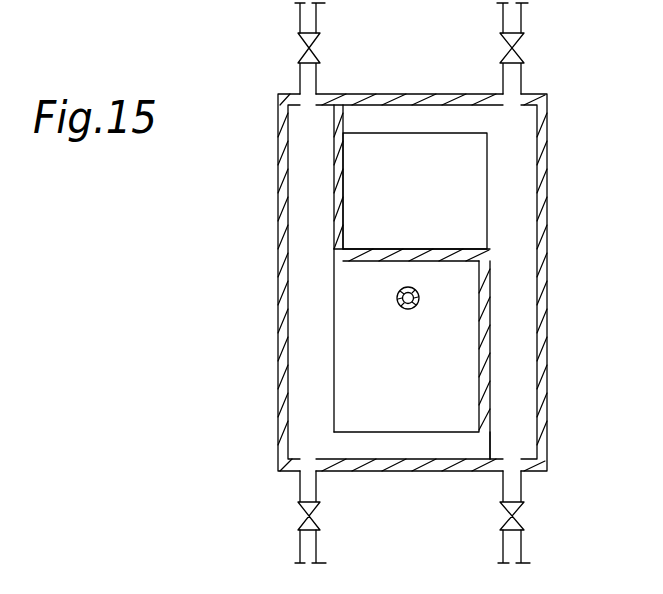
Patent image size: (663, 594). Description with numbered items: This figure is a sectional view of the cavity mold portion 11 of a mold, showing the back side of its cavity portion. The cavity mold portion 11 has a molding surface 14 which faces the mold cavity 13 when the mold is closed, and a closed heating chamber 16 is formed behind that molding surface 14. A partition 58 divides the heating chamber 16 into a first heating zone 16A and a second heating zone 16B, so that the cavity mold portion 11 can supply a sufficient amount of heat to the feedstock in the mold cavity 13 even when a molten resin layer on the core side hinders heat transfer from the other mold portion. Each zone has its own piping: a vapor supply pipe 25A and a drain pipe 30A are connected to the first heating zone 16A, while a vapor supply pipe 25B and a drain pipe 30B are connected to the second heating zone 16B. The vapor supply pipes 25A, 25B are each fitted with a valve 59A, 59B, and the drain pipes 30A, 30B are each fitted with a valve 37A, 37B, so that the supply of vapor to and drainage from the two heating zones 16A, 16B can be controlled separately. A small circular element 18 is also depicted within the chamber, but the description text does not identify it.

The cavity mold portion 11 is at (266, 386).
The mold cavity 13 is at (460, 172).
The molding surface 14 is at (465, 347).
The heating chamber 16 is at (290, 298).
The first heating zone 16A is at (296, 223).
The second heating zone 16B is at (522, 214).
The conduit 18 is at (409, 310).
The vapor supply pipe 25A is at (300, 25).
The vapor supply pipe 25B is at (515, 12).
The drain pipe 30A is at (300, 552).
The drain pipe 30B is at (513, 543).
The valve 37A is at (307, 524).
The valve 37B is at (522, 516).
The partition 58 is at (417, 251).
The valve 59A is at (306, 52).
The valve 59B is at (515, 52).